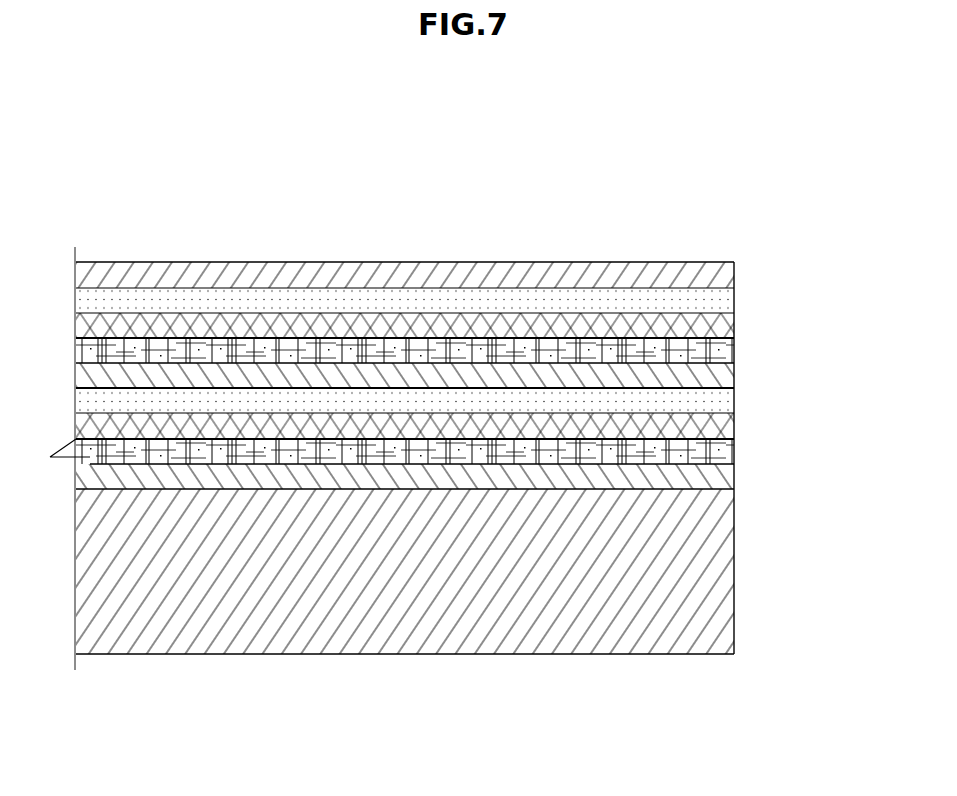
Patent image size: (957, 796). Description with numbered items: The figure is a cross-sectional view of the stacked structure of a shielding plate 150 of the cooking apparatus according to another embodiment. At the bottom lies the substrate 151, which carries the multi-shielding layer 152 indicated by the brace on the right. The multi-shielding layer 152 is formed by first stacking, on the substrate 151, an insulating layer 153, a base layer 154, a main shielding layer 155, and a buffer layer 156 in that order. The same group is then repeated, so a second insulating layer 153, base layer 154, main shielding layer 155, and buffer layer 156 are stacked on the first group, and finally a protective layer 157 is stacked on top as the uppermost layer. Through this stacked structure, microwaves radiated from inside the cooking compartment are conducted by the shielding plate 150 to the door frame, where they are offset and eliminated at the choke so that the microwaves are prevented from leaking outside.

The shielding plate 150 is at (435, 158).
The substrate 151 is at (737, 588).
The multi-shielding layer 152 is at (821, 268).
The insulating layer 153 is at (762, 477).
The base layer 154 is at (762, 450).
The main shielding layer 155 is at (762, 423).
The buffer layer 156 is at (762, 397).
The protective layer 157 is at (737, 263).